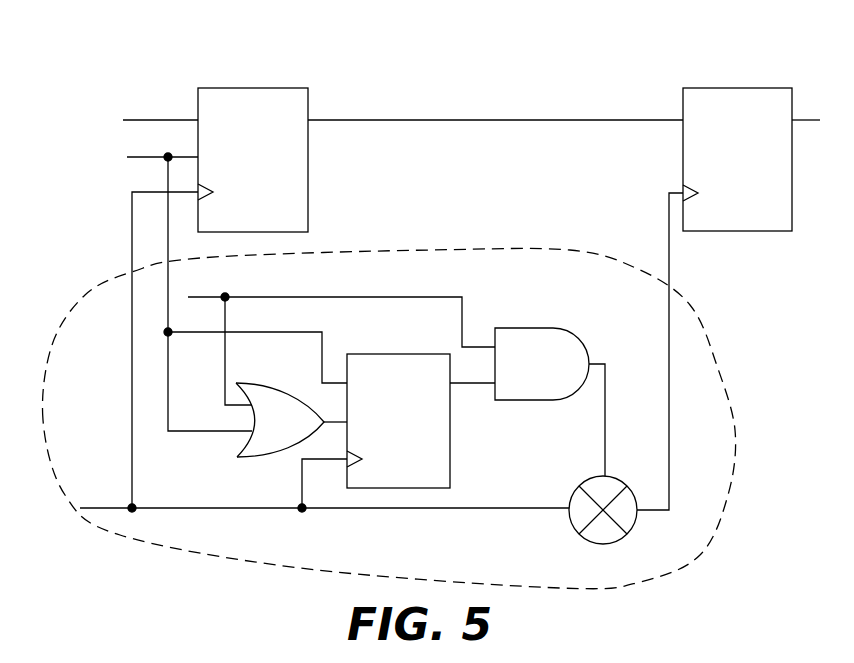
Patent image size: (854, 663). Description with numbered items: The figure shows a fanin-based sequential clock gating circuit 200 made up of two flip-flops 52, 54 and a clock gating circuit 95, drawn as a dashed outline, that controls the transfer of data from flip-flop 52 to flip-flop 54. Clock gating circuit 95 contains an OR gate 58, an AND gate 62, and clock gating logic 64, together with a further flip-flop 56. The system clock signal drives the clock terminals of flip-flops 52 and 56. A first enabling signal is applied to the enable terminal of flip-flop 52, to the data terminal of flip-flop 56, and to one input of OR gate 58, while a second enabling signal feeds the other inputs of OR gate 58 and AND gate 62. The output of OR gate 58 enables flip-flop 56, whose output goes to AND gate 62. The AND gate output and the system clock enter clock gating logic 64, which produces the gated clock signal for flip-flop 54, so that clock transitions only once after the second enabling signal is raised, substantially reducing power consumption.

The fanin-based sequential clock gating circuit 200 is at (466, 72).
The flip-flop 52 is at (300, 88).
The flip-flop 54 is at (688, 88).
The flip-flop 56 is at (405, 489).
The OR gate 58 is at (238, 452).
The AND gate 62 is at (531, 328).
The clock gating logic 64 is at (569, 515).
The clock gating circuit 95 is at (735, 400).